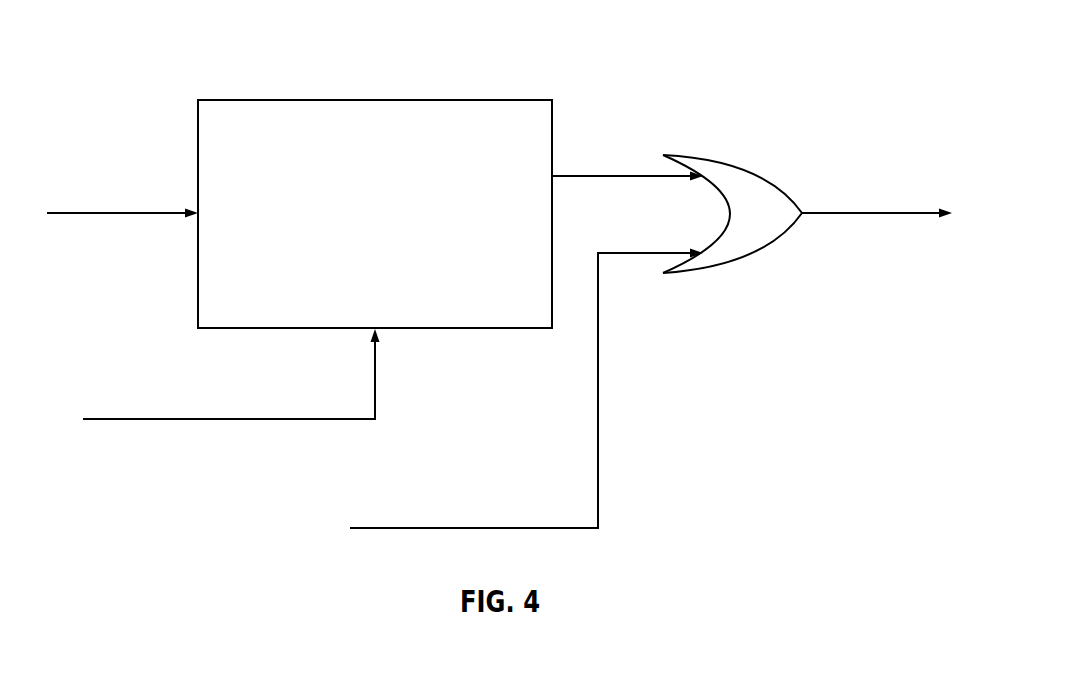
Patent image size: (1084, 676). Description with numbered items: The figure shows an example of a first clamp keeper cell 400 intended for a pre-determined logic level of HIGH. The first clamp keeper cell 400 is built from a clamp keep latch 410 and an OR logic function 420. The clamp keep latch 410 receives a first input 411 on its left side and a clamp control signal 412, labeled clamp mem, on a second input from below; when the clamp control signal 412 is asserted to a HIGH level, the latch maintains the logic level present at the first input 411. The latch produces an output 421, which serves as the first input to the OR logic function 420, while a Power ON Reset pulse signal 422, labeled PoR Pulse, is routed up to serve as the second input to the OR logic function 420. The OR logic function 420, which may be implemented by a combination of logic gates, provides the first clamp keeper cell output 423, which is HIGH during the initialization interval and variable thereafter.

The first clamp keeper cell 400 is at (729, 88).
The clamp keep latch 410 is at (267, 94).
The first input 411 is at (123, 212).
The clamp control signal 412 is at (230, 418).
The OR logic function 420 is at (771, 228).
The output 421 is at (577, 176).
The Power ON Reset (PoR) pulse signal 422 is at (640, 252).
The first clamp keeper cell output 423 is at (877, 213).